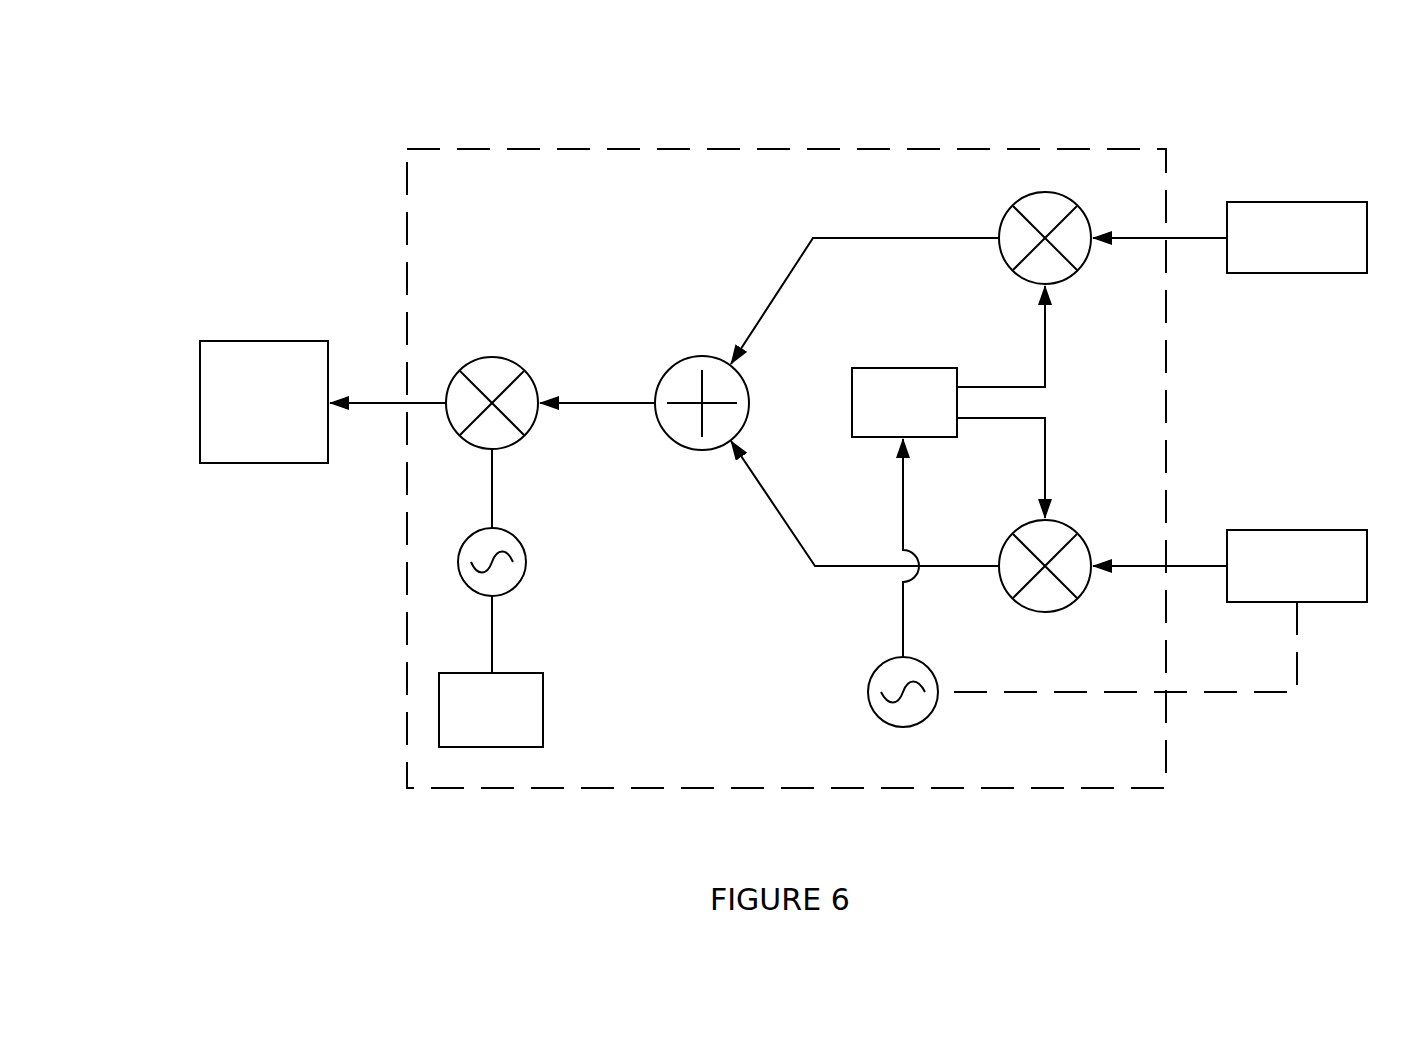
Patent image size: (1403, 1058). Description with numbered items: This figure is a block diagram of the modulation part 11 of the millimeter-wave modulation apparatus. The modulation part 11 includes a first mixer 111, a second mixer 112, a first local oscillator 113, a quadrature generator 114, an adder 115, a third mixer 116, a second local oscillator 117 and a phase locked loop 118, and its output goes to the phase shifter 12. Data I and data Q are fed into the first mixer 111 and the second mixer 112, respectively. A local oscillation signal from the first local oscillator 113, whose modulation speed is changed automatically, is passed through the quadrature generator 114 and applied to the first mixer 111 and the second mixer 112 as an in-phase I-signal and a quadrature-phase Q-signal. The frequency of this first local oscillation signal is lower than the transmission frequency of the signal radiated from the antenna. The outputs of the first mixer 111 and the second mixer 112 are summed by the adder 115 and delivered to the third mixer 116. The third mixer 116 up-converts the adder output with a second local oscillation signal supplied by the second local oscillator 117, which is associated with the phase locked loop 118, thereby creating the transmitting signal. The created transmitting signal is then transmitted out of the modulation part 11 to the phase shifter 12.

The modulation part 11 is at (838, 148).
The phase shifter 12 is at (258, 341).
The first mixer 111 is at (1043, 192).
The second mixer 112 is at (1065, 522).
The first local oscillator 113 is at (900, 727).
The quadrature generator 114 is at (903, 368).
The adder 115 is at (700, 357).
The third mixer 116 is at (488, 357).
The second local oscillator 117 is at (458, 558).
The phase locked loop 118 is at (439, 708).